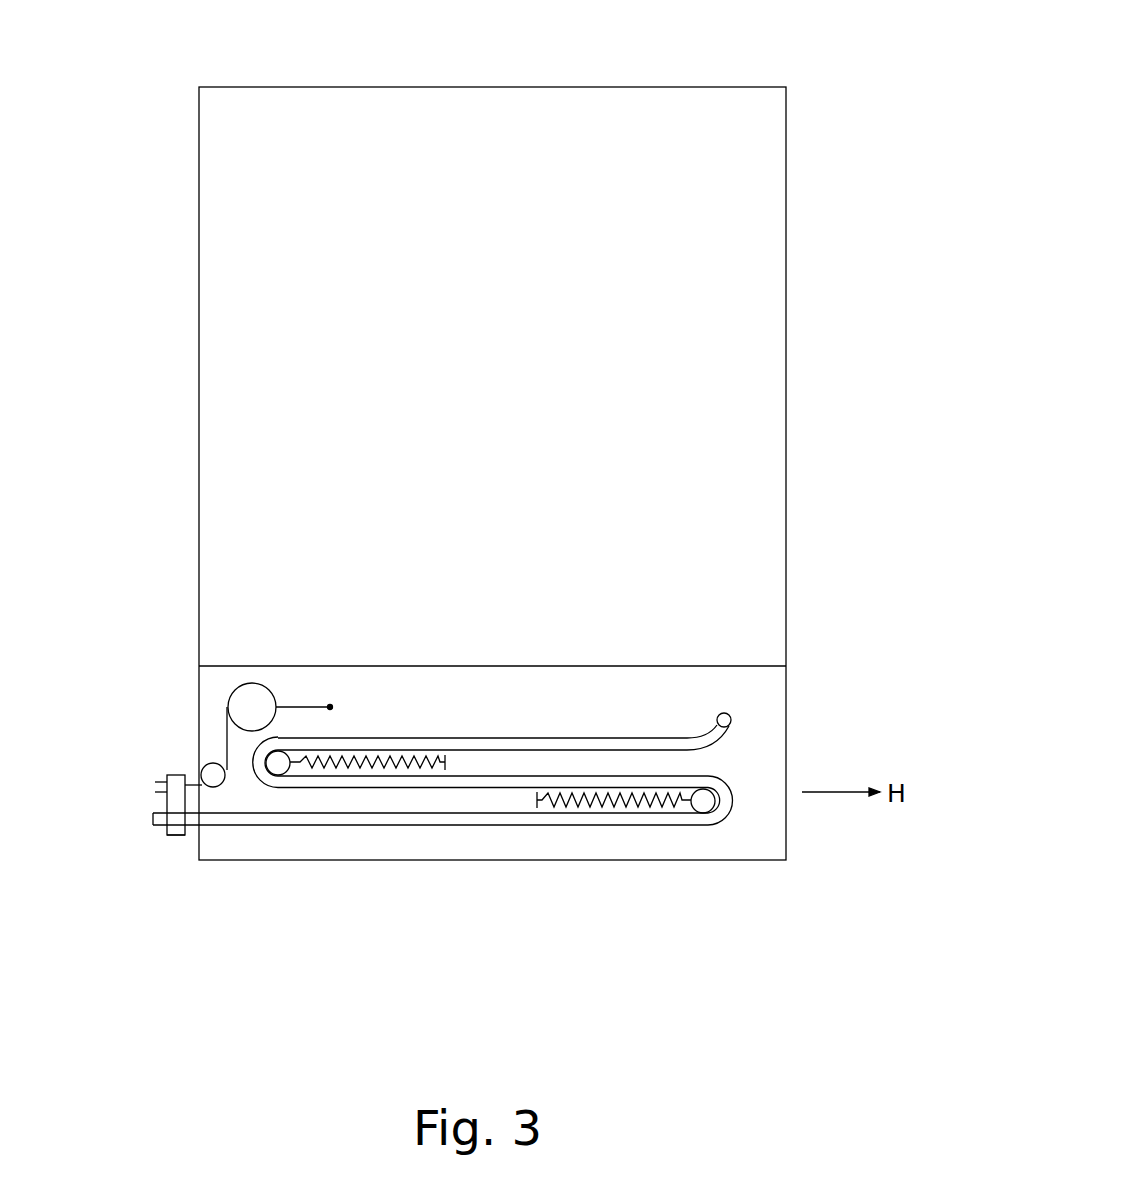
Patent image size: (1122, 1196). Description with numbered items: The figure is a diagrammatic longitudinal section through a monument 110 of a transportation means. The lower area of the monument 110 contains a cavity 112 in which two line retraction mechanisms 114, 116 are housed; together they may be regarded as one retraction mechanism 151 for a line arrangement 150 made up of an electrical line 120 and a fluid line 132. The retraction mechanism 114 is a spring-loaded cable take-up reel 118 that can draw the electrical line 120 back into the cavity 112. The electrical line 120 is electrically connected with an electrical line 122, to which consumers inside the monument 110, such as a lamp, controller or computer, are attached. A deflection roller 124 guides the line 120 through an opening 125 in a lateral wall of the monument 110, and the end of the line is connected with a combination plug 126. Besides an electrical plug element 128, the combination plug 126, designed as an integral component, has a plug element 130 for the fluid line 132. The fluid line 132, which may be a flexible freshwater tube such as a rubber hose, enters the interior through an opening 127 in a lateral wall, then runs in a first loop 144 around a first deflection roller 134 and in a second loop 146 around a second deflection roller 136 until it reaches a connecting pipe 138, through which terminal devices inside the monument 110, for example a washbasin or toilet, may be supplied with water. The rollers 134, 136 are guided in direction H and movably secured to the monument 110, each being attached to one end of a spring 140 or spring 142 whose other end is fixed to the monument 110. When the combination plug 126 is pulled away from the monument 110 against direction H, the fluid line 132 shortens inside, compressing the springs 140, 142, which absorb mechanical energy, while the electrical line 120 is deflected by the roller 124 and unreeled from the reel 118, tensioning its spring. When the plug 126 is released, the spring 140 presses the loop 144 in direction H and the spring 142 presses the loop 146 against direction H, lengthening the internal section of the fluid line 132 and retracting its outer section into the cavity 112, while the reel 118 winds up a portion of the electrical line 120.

The monument 110 is at (702, 122).
The cavity 112 is at (762, 700).
The line retraction mechanism 114 is at (230, 684).
The line retraction mechanism 116 is at (435, 834).
The cable take-up reel 118 is at (253, 703).
The electrical line 120 is at (226, 748).
The electrical line 122 is at (302, 698).
The deflection roller 124 is at (216, 778).
The opening 125 is at (183, 774).
The combination plug 126 is at (163, 834).
The opening 127 is at (190, 832).
The electrical plug element 128 is at (138, 777).
The plug element 130 is at (140, 820).
The fluid line 132 is at (473, 826).
The first deflection roller 134 is at (700, 808).
The second deflection roller 136 is at (286, 757).
The connecting pipe 138 is at (715, 748).
The spring 140 is at (570, 803).
The spring 142 is at (376, 766).
The first loop 144 is at (738, 805).
The second loop 146 is at (250, 772).
The line arrangement 150 is at (308, 967).
The retraction mechanism 151 is at (557, 716).